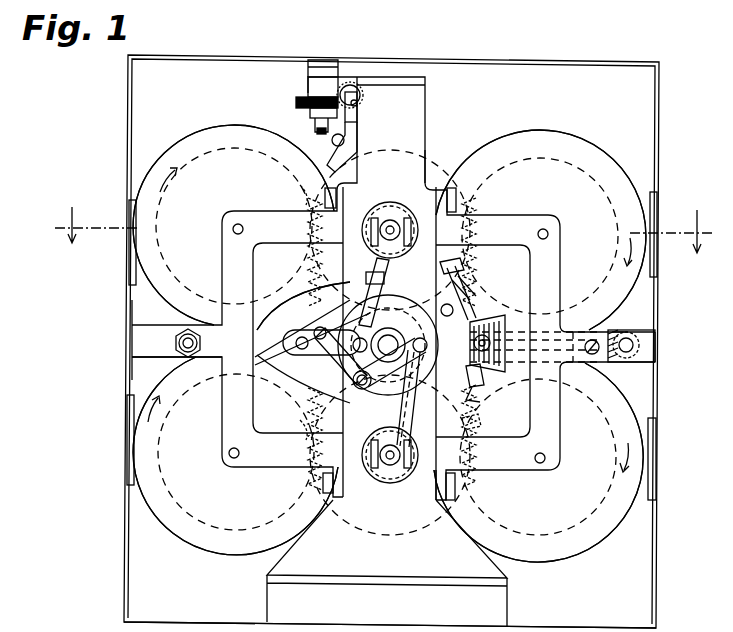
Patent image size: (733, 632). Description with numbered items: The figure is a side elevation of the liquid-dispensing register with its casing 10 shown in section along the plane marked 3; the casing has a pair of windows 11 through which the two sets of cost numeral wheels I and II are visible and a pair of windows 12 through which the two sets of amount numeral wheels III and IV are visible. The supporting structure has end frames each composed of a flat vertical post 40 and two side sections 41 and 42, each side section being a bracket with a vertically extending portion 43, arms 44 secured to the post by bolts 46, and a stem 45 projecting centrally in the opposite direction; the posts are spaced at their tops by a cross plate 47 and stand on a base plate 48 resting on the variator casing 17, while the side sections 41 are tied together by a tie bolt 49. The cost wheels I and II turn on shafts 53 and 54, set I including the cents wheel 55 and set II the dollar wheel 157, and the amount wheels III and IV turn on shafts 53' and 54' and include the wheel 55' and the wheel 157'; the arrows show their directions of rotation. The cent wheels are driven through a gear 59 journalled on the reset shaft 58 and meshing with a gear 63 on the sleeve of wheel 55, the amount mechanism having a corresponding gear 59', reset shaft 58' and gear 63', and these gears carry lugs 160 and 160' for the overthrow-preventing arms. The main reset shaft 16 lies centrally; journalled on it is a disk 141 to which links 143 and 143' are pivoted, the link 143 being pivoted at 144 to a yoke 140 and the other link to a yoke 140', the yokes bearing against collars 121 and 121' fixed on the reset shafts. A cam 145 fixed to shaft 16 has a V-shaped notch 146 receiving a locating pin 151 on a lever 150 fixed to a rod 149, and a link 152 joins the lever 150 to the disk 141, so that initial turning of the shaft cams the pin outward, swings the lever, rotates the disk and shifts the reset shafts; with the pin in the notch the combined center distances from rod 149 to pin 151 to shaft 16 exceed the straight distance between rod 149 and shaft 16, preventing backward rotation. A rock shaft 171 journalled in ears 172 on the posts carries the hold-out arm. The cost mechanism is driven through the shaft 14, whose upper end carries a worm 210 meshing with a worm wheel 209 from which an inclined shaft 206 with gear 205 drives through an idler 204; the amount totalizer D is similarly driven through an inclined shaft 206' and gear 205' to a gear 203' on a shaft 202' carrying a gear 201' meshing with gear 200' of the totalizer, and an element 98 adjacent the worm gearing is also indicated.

The casing 10 is at (648, 63).
The windows 11 is at (130, 233).
The windows 12 is at (128, 453).
The shaft 14 is at (316, 130).
The main reset shaft 16 is at (388, 345).
The variator casing 17 is at (688, 630).
The section line 3 is at (383, 217).
The flat vertical post 40 is at (426, 105).
The side section 41 is at (128, 342).
The side section 42 is at (657, 347).
The vertically extending portion 43 is at (388, 340).
The arms 44 is at (286, 236).
The stem 45 is at (175, 343).
The bolts 46 is at (451, 187).
The cross plate 47 is at (406, 77).
The base plate 48 is at (387, 563).
The tie bolt 49 is at (183, 357).
The shaft 53 is at (211, 235).
The shaft 53' is at (211, 456).
The shaft 54 is at (566, 220).
The shaft 54' is at (566, 451).
The counter wheel 55 is at (233, 214).
The counter wheel 55' is at (235, 456).
The reset shaft 58 is at (395, 208).
The reset shaft 58' is at (391, 477).
The gear 59 is at (437, 155).
The gear 59' is at (429, 514).
The gear 63 is at (287, 191).
The gear 63' is at (288, 424).
The lever 98 is at (332, 140).
The collar 121 is at (386, 209).
The collar 121' is at (401, 482).
The yoke 140 is at (390, 230).
The yoke 140' is at (390, 455).
The disk 141 is at (372, 392).
The link 143 is at (395, 292).
The link 143' is at (430, 399).
The pivot 144 is at (387, 276).
The cam 145 is at (386, 410).
The V-shaped notch 146 is at (328, 304).
The rod 149 is at (300, 360).
The lever 150 is at (296, 342).
The locating pin 151 is at (330, 287).
The link 152 is at (325, 372).
The counter wheel 157 is at (541, 217).
The counter wheel 157' is at (541, 462).
The lug 160 is at (392, 252).
The lug 160' is at (404, 437).
The rock shaft 171 is at (456, 298).
The ears 172 is at (491, 283).
The gear 200' is at (637, 337).
The gear 201' is at (635, 313).
The shaft 202' is at (585, 328).
The gear 203' is at (497, 375).
The idler 204 is at (492, 330).
The gear 205 is at (485, 293).
The gear 205' is at (498, 398).
The inclined shaft 206 is at (472, 264).
The inclined shaft 206' is at (489, 426).
The worm wheel 209 is at (361, 96).
The worm 210 is at (298, 102).
The totalizer D is at (652, 332).
The set of numeral wheels I is at (193, 132).
The set of numeral wheels II is at (610, 148).
The set of numeral wheels III is at (184, 545).
The set of numeral wheels IV is at (585, 554).